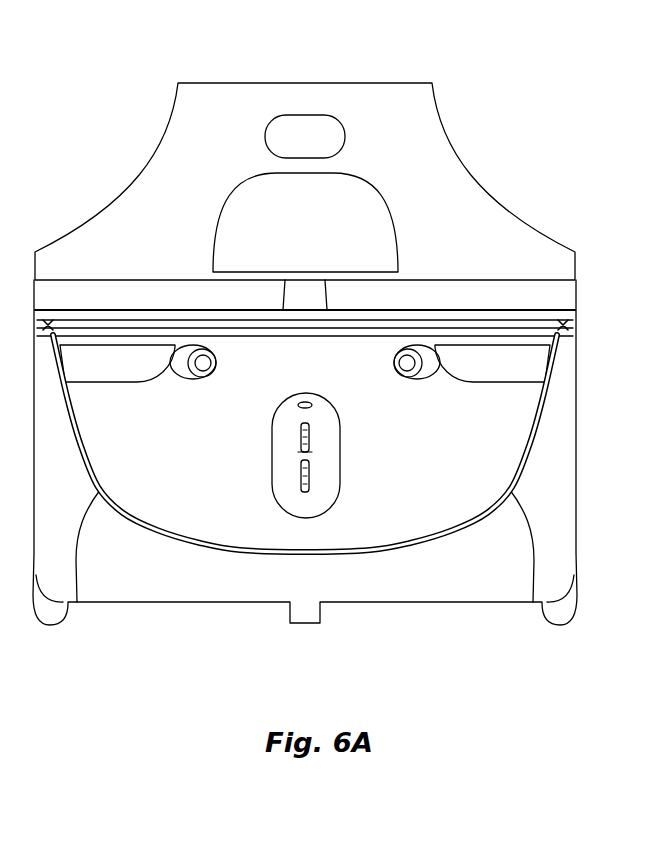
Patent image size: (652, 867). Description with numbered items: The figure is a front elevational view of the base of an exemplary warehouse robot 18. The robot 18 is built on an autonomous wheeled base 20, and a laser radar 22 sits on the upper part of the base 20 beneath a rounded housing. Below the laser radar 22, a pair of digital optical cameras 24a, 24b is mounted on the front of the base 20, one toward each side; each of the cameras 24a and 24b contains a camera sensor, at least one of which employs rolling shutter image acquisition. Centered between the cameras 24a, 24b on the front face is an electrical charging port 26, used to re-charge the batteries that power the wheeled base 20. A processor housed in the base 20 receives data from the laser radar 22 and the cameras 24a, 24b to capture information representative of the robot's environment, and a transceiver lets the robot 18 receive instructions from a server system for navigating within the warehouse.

The robot 18 is at (572, 77).
The autonomous wheeled base 20 is at (197, 463).
The laser radar 22 is at (303, 295).
The digital optical camera 24a is at (179, 379).
The digital optical camera 24b is at (431, 379).
The electrical charging port 26 is at (325, 477).